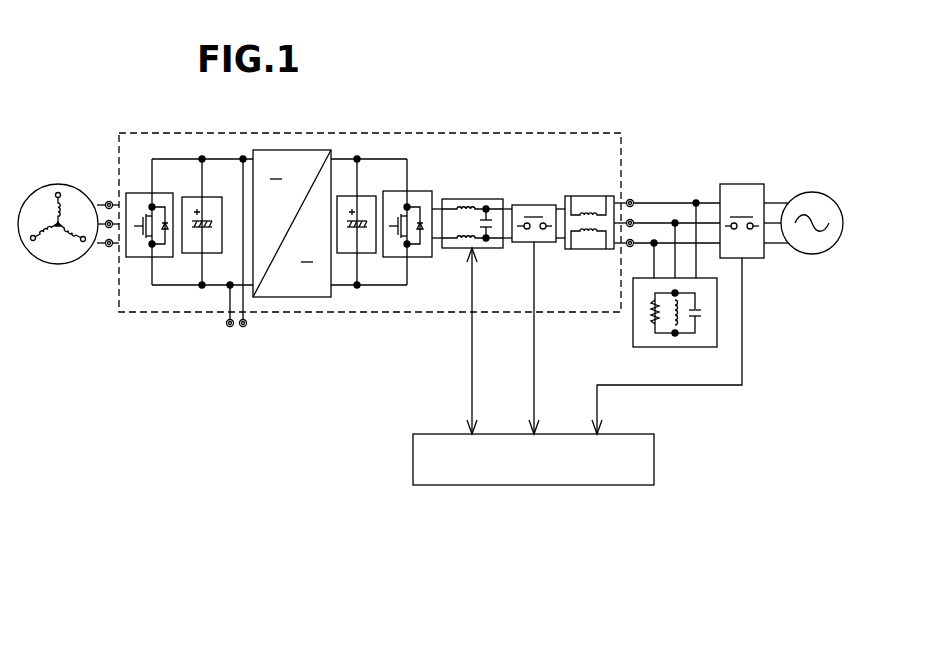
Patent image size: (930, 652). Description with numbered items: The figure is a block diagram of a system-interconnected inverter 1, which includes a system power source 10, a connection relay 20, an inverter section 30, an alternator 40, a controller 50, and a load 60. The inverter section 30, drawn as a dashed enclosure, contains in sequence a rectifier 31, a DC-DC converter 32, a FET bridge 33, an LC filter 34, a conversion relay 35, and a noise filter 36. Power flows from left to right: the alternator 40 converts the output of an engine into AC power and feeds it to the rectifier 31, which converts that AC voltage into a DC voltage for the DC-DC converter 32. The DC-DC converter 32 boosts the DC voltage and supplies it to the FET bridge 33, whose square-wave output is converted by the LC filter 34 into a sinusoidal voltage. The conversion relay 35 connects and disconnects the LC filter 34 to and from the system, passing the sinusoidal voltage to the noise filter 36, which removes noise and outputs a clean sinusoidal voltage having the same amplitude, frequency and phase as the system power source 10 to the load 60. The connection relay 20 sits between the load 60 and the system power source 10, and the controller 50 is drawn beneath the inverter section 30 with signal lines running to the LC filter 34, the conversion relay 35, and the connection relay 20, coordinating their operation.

The system-interconnected inverter 1 is at (277, 472).
The system power source 10 is at (808, 192).
The connection relay 20 is at (742, 184).
The inverter section 30 is at (380, 132).
The rectifier 31 is at (140, 257).
The DC-DC converter 32 is at (293, 297).
The FET bridge 33 is at (420, 192).
The LC filter 34 is at (483, 200).
The conversion relay 35 is at (533, 205).
The noise filter 36 is at (587, 200).
The alternator 40 is at (59, 265).
The controller 50 is at (647, 459).
The load 60 is at (712, 333).